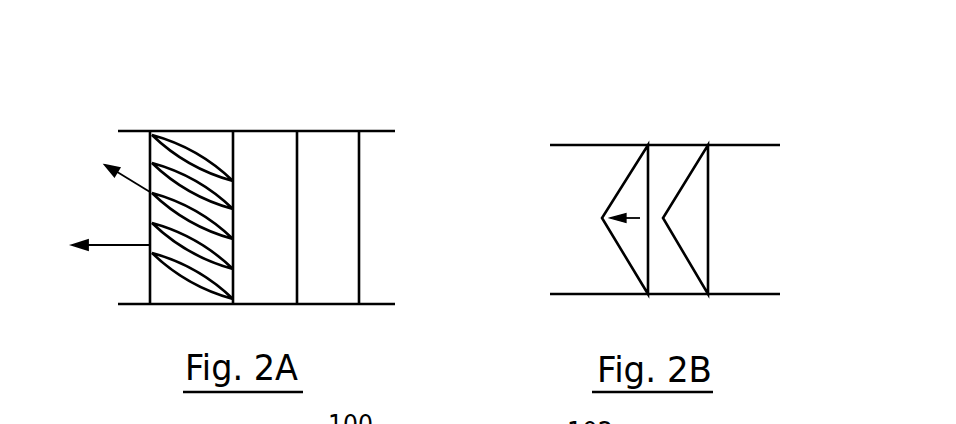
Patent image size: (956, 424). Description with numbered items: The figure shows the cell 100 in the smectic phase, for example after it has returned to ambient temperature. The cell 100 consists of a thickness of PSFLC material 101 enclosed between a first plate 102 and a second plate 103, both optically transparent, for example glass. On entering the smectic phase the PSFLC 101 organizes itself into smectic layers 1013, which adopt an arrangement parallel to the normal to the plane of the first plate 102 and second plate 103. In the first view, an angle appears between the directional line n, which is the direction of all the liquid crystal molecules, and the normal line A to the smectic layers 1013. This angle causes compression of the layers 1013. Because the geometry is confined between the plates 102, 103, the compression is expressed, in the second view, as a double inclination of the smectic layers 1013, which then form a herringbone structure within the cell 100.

In FIG. 2A, the cell 100 is at (152, 110).
In FIG. 2B, the cell 100 is at (603, 95).
In FIG. 2B, the PSFLC material 101 is at (733, 228).
In FIG. 2A, the first optically transparent plate 102 is at (297, 131).
In FIG. 2B, the first optically transparent plate 102 is at (610, 145).
In FIG. 2A, the second optically transparent plate 103 is at (313, 304).
In FIG. 2B, the second optically transparent plate 103 is at (688, 295).
In FIG. 2A, the smectic layers 1013 is at (359, 192).
In FIG. 2B, the smectic layers 1013 is at (607, 227).